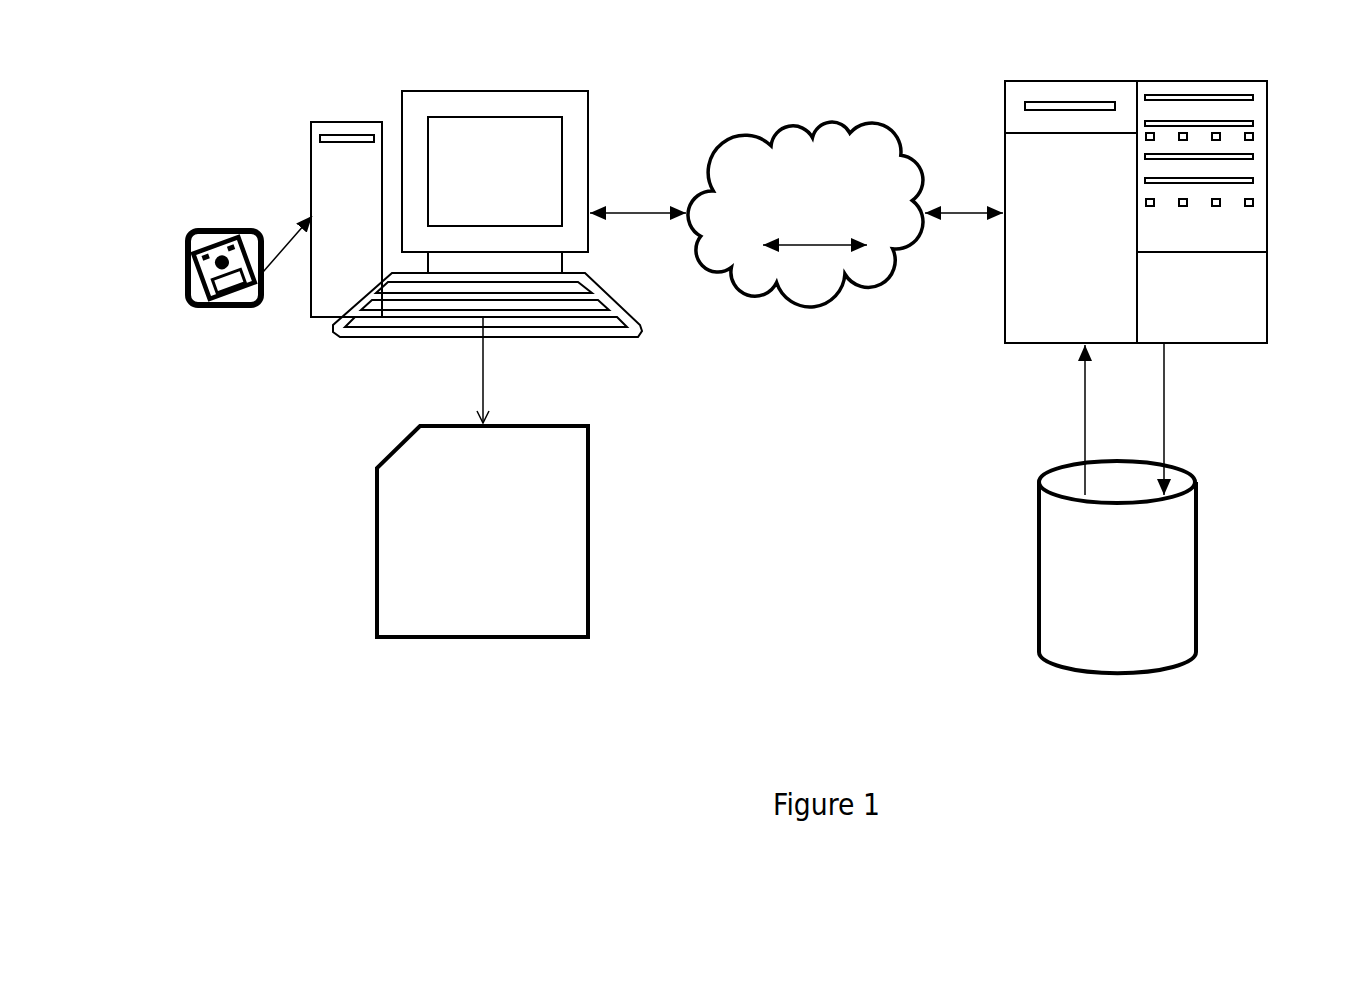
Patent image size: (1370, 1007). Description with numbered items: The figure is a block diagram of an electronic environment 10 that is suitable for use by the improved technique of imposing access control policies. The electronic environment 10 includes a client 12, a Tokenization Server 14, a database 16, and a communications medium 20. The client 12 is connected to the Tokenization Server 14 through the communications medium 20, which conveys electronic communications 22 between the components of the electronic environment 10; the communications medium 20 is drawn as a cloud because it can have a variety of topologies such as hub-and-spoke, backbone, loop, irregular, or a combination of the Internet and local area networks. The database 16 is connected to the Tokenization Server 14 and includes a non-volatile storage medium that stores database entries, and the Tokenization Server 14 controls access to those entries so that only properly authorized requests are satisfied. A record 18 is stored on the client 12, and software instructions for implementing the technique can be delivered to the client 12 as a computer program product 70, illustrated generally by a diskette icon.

The electronic environment 10 is at (298, 93).
The client 12 is at (480, 90).
The Tokenization Server 14 is at (1005, 150).
The database 16 is at (1196, 567).
The record 18 is at (589, 533).
The communications medium 20 is at (750, 65).
The electronic communications 22 is at (815, 220).
The computer program product 70 is at (225, 308).